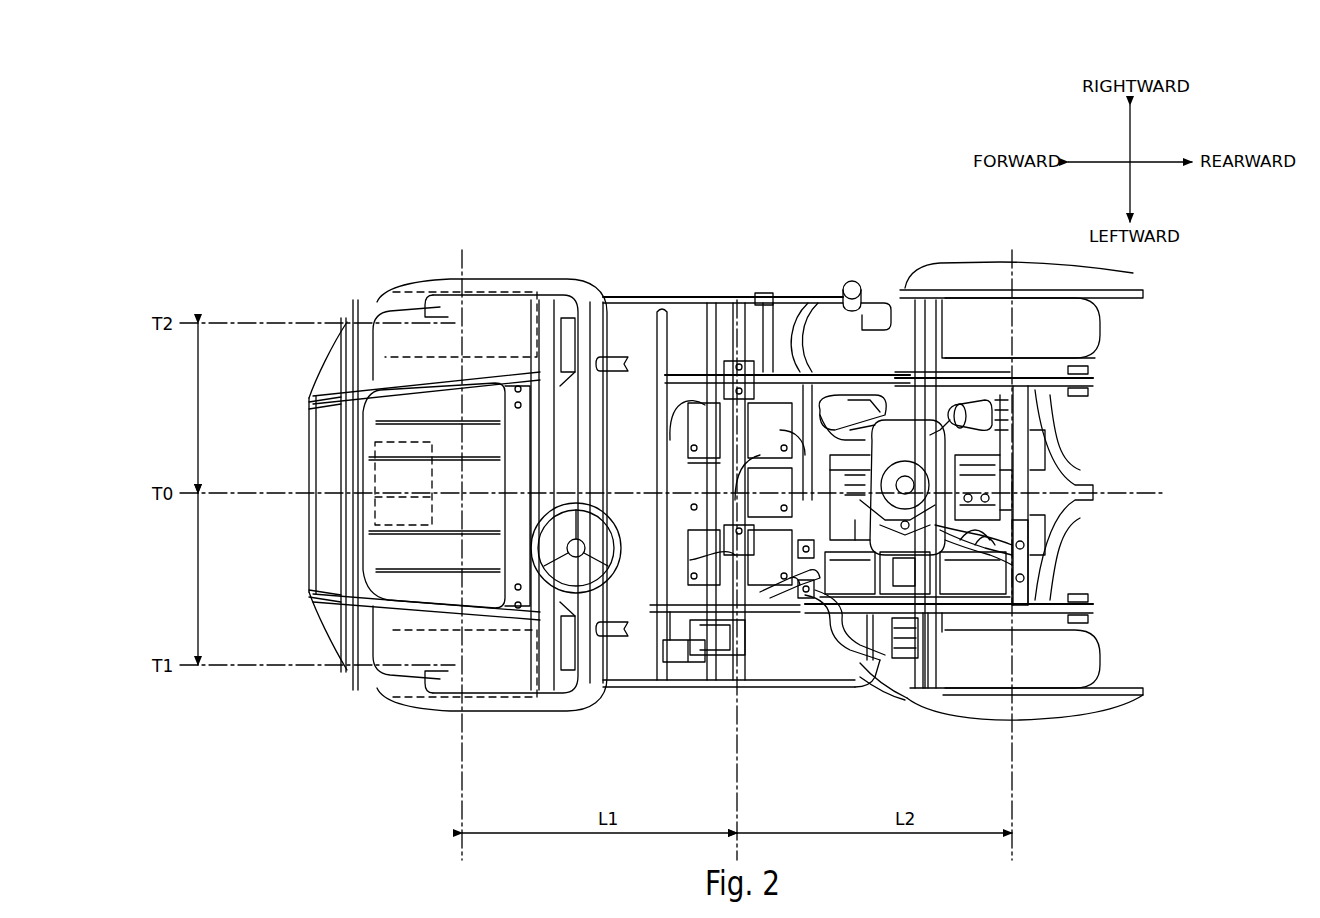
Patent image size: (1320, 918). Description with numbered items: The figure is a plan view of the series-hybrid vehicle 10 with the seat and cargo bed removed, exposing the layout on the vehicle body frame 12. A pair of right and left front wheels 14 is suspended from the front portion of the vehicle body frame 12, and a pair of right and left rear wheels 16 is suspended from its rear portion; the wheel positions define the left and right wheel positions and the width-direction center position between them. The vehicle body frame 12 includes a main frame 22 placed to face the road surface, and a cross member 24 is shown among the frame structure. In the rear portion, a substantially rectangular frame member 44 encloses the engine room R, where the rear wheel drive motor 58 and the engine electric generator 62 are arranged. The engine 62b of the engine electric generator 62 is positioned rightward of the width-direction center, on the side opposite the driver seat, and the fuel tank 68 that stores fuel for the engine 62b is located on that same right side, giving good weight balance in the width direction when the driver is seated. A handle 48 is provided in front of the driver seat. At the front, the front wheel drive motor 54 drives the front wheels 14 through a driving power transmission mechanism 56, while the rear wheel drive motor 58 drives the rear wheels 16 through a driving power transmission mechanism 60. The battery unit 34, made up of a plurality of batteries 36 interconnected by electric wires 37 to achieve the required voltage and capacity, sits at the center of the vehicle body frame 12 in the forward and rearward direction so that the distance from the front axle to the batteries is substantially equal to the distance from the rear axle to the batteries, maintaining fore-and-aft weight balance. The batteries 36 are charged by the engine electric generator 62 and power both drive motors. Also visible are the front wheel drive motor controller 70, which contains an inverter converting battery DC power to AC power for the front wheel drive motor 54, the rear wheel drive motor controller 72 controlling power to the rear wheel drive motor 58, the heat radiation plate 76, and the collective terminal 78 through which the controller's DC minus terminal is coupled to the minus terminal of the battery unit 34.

The hybrid vehicle 10 is at (356, 154).
The vehicle body frame 12 is at (710, 262).
The front wheels 14 is at (410, 330).
The rear wheels 16 is at (1087, 329).
The main frame 22 is at (655, 300).
The cross member 24 is at (628, 330).
The battery unit 34 is at (758, 420).
The batteries 36 is at (695, 470).
The electric wires 37 is at (735, 558).
The frame member 44 is at (1048, 366).
The handle 48 is at (392, 405).
The front wheel drive motor 54 is at (390, 478).
The driving power transmission mechanism 56 is at (390, 513).
The rear wheel drive motor 58 is at (965, 520).
The driving power transmission mechanism 60 is at (985, 485).
The engine electric generator 62 is at (915, 433).
The engine 62b is at (885, 430).
The fuel tank 68 is at (875, 314).
The engine room R is at (963, 400).
The front wheel drive motor controller 70 is at (850, 580).
The rear wheel drive motor controller 72 is at (1018, 615).
The heat radiation plate 76 is at (893, 578).
The collective terminal 78 is at (965, 578).